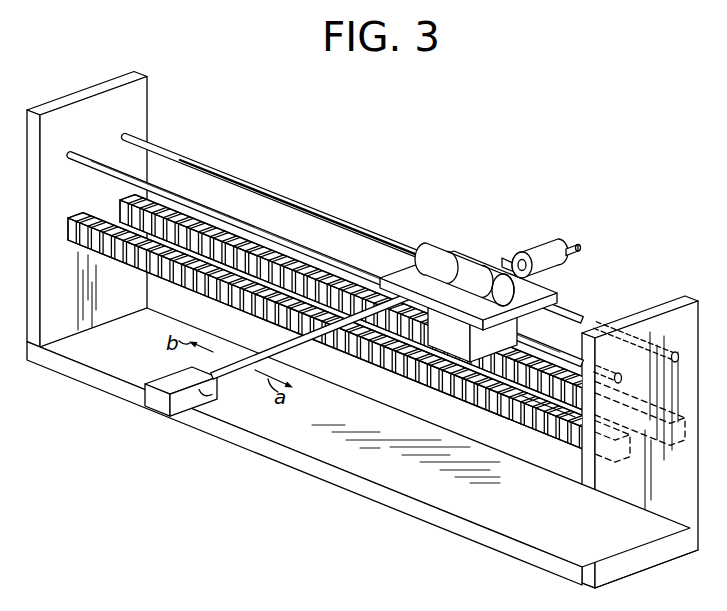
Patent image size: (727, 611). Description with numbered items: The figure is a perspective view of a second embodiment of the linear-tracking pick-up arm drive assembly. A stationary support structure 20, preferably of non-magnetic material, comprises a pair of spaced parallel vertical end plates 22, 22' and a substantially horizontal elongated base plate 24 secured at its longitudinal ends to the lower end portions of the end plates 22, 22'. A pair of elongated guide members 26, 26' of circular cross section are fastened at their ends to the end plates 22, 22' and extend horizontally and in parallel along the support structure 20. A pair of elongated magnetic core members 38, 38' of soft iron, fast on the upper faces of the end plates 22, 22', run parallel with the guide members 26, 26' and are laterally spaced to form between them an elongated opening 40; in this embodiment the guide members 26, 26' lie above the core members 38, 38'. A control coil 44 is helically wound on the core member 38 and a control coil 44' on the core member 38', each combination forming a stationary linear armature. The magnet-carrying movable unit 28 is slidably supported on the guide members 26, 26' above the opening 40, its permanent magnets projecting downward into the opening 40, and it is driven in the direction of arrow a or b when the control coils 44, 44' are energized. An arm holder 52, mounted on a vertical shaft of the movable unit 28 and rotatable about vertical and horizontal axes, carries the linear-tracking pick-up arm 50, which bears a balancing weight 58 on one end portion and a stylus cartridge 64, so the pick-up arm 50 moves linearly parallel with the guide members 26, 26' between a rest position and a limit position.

The stationary support structure 20 is at (578, 588).
The end plate 22 is at (640, 422).
The end plate 22' is at (114, 210).
The base plate 24 is at (253, 452).
The guide member 26 is at (400, 243).
The guide member 26' is at (344, 263).
The magnet-carrying movable unit 28 is at (382, 255).
The magnetic core member 38 is at (402, 302).
The magnetic core member 38' is at (349, 338).
The opening 40 is at (542, 388).
The control coil 44 is at (360, 295).
The control coil 44' is at (331, 330).
The linear-tracking pick-up arm 50 is at (330, 333).
The arm holder 52 is at (468, 250).
The balancing weight 58 is at (535, 240).
The stylus cartridge 64 is at (157, 412).